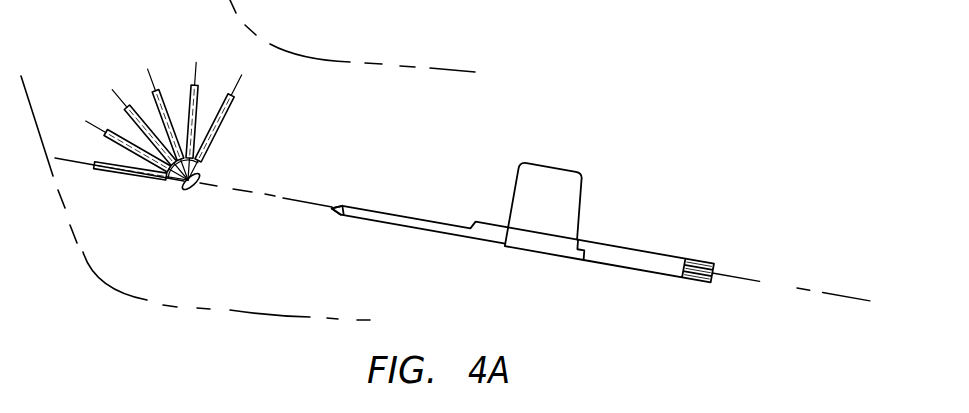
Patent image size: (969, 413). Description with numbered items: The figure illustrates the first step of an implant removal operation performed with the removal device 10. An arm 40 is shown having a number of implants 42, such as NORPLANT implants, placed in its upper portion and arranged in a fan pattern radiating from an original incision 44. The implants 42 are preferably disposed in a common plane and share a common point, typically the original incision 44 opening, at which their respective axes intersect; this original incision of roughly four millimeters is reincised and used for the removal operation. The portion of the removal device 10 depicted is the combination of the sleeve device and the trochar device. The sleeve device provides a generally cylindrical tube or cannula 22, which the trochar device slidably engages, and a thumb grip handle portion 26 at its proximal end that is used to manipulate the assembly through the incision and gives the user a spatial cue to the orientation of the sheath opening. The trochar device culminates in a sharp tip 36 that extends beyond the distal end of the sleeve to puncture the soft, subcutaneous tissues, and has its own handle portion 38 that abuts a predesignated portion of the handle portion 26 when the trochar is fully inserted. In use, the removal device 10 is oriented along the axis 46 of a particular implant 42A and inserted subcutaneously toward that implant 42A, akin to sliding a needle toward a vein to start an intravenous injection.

The removal device 10 is at (517, 248).
The cannula 22 is at (490, 222).
The handle portion 26 is at (558, 178).
The tip 36 is at (333, 213).
The handle portion 38 is at (648, 258).
The arm 40 is at (401, 64).
The implants 42 is at (207, 140).
The particular implant 42A is at (130, 178).
The original incision 44 is at (200, 176).
The axis 46 is at (778, 285).